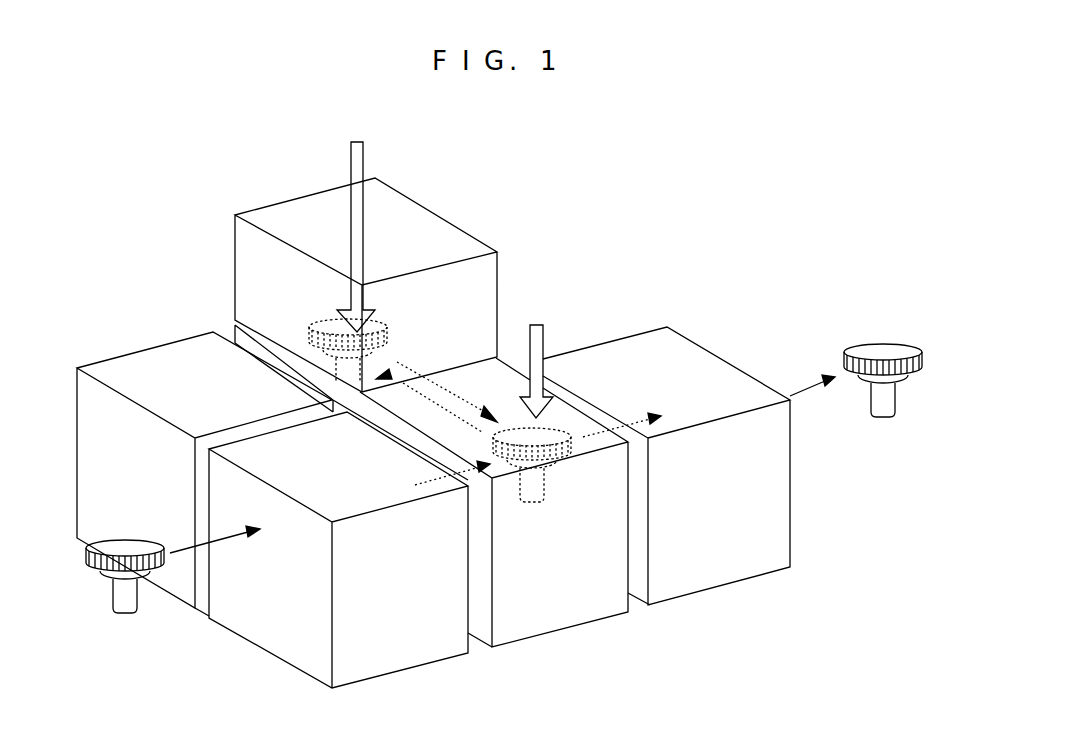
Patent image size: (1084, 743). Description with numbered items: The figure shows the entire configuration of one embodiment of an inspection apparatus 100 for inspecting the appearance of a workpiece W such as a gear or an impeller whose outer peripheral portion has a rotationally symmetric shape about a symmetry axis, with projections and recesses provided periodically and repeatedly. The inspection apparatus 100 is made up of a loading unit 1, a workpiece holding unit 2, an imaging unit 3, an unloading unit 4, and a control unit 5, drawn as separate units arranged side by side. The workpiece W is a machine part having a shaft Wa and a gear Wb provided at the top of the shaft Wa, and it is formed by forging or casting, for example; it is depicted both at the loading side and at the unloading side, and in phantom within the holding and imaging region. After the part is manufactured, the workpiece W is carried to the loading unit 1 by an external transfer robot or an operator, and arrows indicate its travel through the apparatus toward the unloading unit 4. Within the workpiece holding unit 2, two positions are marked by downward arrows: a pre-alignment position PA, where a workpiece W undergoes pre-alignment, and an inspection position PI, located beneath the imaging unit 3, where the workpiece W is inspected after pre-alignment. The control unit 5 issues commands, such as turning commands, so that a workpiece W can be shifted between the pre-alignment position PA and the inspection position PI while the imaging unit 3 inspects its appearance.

The inspection apparatus 100 is at (578, 251).
The loading unit 1 is at (390, 655).
The workpiece holding unit 2 is at (562, 613).
The imaging unit 3 is at (442, 233).
The unloading unit 4 is at (715, 575).
The control unit 5 is at (163, 360).
The workpiece W is at (398, 330).
The shaft Wa is at (517, 521).
The gear Wb is at (500, 502).
The inspection position PI is at (356, 222).
The pre-alignment position PA is at (536, 352).